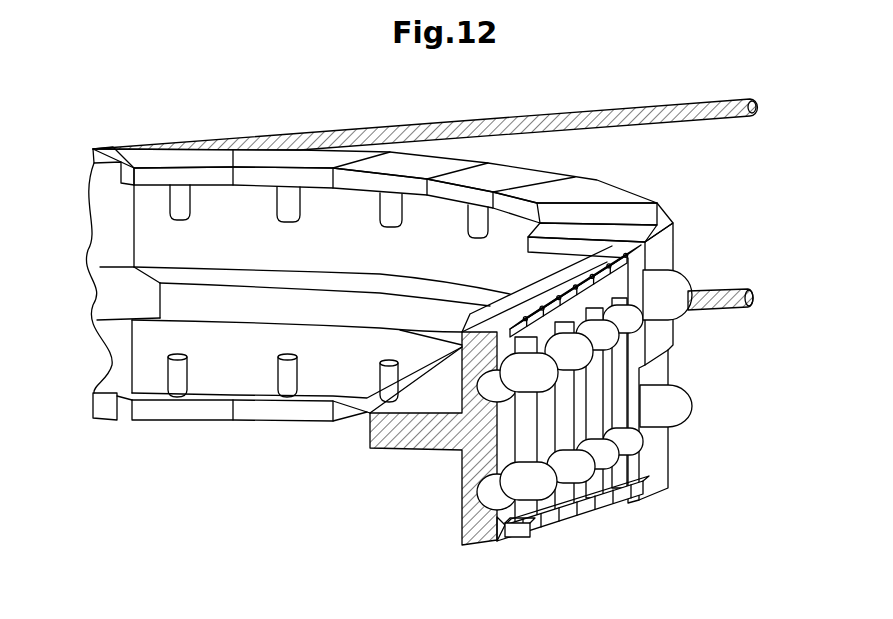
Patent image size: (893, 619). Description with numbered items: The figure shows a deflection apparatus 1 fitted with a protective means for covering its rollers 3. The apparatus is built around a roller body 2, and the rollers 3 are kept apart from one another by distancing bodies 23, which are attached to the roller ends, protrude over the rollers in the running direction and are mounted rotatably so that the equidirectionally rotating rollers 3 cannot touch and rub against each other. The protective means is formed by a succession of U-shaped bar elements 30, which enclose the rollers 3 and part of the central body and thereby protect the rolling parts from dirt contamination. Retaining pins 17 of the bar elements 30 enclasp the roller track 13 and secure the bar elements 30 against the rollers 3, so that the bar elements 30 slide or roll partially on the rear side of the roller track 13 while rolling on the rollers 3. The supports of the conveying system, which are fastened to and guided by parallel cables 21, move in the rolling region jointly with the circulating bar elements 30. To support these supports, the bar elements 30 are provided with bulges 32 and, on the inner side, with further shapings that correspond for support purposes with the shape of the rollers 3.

The deflection apparatus 1 is at (371, 284).
The roller body 2 is at (584, 535).
The rollers 3 is at (563, 470).
The roller track 13 is at (470, 465).
The retaining pins 17 is at (178, 198).
The cables 21 is at (627, 112).
The distancing bodies 23 is at (530, 528).
The bar elements 30 is at (610, 190).
The bulges 32 is at (683, 403).